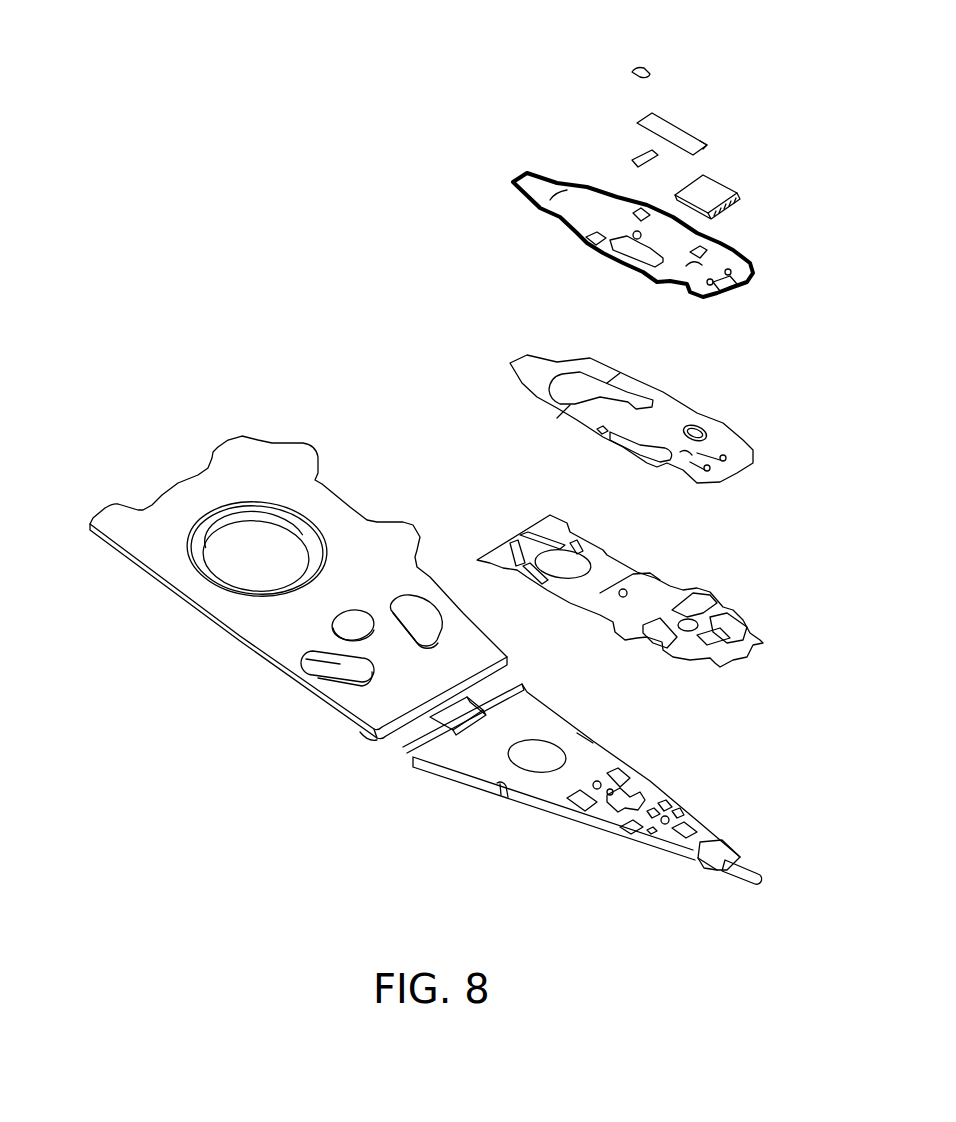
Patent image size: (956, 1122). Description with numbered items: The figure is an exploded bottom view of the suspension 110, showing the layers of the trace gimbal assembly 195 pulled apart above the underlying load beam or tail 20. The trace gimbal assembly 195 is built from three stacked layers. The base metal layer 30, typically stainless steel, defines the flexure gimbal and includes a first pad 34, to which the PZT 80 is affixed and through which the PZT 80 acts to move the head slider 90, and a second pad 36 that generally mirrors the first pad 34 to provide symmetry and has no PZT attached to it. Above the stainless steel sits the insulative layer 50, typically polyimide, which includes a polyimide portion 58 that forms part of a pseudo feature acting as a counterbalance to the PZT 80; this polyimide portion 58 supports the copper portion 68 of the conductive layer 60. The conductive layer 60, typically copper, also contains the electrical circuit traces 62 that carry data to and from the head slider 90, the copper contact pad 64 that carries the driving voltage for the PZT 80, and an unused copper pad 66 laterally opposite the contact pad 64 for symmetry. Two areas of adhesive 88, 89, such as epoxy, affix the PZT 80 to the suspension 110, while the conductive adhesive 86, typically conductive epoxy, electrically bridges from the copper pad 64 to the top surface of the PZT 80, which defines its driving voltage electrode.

The suspension 110 is at (103, 939).
The trace gimbal assembly 195 is at (753, 15).
The load beam / tail 20 is at (623, 757).
The base metal layer 30 is at (492, 522).
The first pad 34 is at (685, 603).
The second pad 36 is at (650, 625).
The insulative layer 50 is at (484, 354).
The polyimide portion 58 is at (634, 437).
The conductive layer 60 is at (488, 168).
The electrical circuit traces 62 is at (530, 198).
The copper contact pad 64 is at (640, 216).
The unused copper pad 66 is at (592, 238).
The copper portion 68 is at (636, 252).
The PZT 80 is at (677, 133).
The conductive adhesive 86 is at (632, 72).
The adhesive area 88 is at (643, 155).
The adhesive area 89 is at (703, 148).
The head slider 90 is at (703, 192).